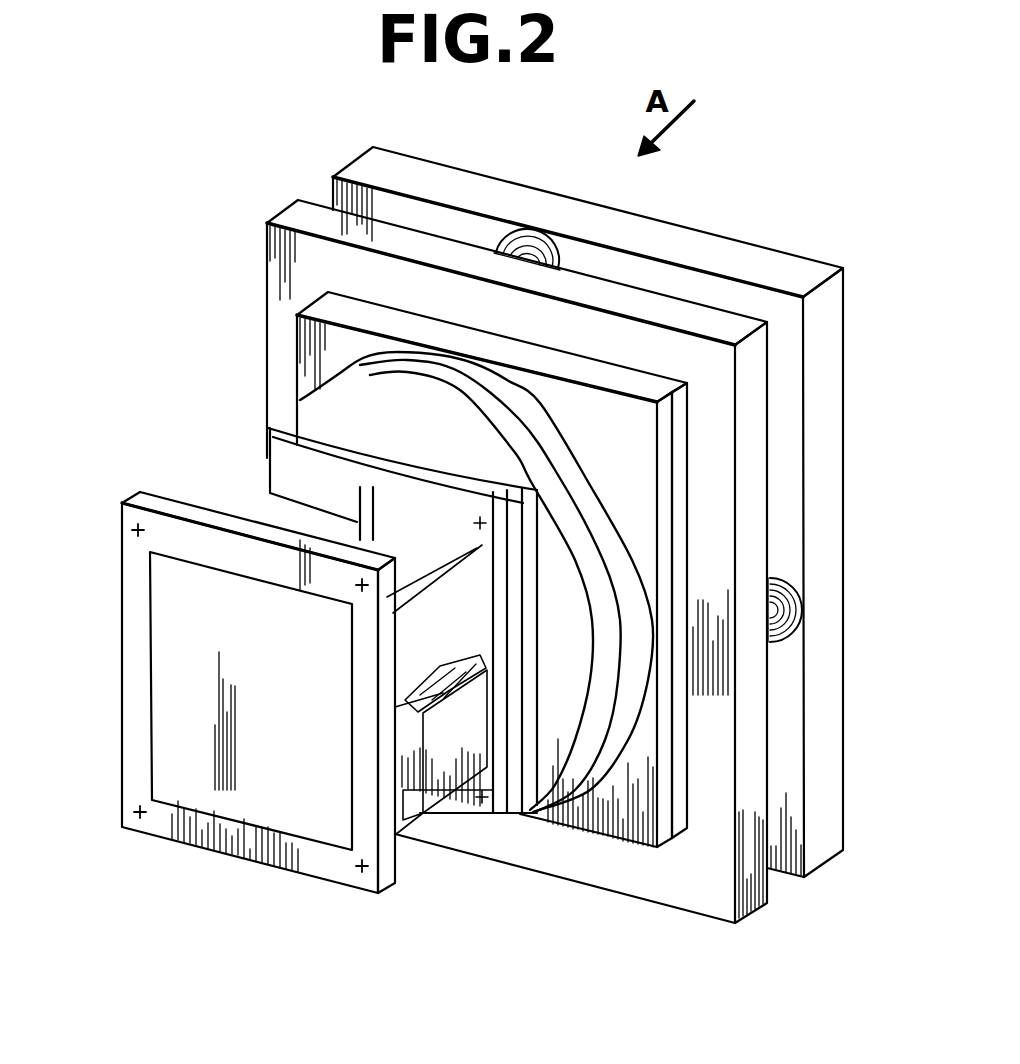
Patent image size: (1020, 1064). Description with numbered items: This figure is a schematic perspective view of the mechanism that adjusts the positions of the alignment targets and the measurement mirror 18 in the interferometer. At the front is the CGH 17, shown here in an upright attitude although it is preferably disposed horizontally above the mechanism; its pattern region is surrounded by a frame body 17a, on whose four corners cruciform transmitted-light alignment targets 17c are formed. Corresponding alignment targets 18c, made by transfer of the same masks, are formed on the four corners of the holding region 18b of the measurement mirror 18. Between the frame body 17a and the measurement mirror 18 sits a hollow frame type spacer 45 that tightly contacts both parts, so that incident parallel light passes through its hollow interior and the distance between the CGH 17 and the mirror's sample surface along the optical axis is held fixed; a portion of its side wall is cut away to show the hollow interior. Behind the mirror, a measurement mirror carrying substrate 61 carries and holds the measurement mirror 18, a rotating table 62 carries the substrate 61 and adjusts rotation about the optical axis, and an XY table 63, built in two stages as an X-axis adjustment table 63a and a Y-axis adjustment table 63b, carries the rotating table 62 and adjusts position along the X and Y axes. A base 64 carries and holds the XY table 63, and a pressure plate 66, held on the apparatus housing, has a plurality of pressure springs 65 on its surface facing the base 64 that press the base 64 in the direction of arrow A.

The CGH 17 is at (222, 701).
The frame body 17a is at (134, 641).
The alignment targets 17c is at (137, 528).
The measurement mirror 18 is at (356, 676).
The holding region 18b is at (458, 816).
The alignment targets 18c is at (266, 455).
The spacer 45 is at (403, 818).
The measurement mirror carrying substrate 61 is at (300, 412).
The rotating table 62 is at (318, 410).
The XY table 63 is at (538, 655).
The X-axis adjustment table 63a is at (683, 828).
The Y-axis adjustment table 63b is at (666, 838).
The base 64 is at (755, 690).
The pressure springs 65 is at (800, 590).
The pressure plate 66 is at (764, 262).